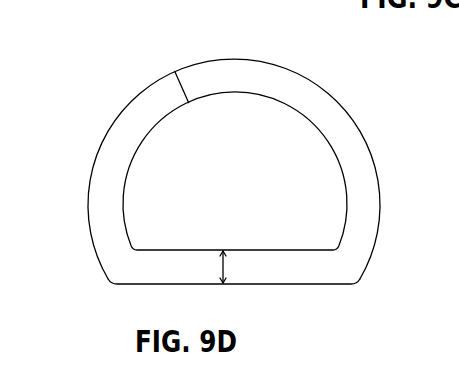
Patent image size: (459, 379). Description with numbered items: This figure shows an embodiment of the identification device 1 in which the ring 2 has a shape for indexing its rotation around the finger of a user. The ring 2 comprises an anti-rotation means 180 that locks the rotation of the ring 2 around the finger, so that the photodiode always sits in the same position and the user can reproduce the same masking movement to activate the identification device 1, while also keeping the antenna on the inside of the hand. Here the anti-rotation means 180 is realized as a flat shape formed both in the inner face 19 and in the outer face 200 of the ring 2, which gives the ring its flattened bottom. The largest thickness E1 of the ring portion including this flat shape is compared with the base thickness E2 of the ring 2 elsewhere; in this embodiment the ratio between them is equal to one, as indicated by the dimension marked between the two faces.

The identification device 1 is at (218, 175).
The ring 2 is at (307, 97).
The inner face 19 is at (126, 173).
The anti-rotation means 180 is at (160, 238).
The outer face 200 is at (278, 285).
The largest thickness E1 is at (227, 269).
The base thickness E2 is at (186, 84).